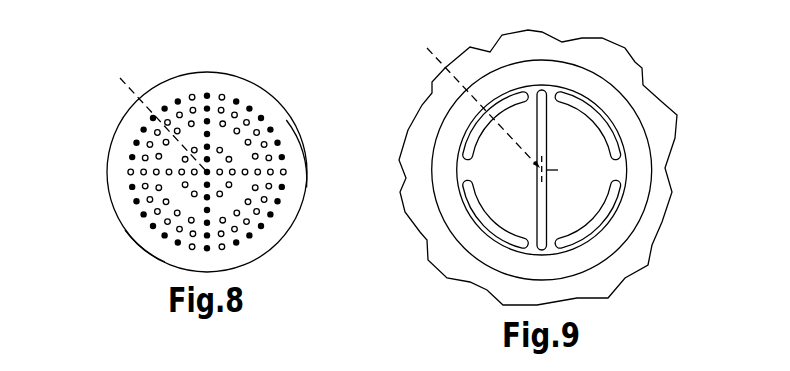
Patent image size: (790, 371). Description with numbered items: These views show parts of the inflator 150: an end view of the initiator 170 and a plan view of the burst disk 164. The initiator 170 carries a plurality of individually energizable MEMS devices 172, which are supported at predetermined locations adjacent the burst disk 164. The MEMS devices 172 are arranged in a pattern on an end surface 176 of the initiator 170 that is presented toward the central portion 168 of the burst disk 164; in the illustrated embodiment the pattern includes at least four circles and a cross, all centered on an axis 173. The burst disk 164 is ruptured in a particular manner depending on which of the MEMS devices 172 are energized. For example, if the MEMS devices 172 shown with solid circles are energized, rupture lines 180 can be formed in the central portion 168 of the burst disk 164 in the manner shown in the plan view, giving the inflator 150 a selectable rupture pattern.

In FIG. 8, the inflator 150 is at (97, 224).
In FIG. 9, the inflator 150 is at (674, 240).
In FIG. 9, the burst disk 164 is at (651, 128).
In FIG. 9, the central portion 168 is at (628, 171).
In FIG. 8, the initiator 170 is at (140, 258).
In FIG. 8, the MEMS devices 172 is at (208, 107).
In FIG. 8, the axis 173 is at (152, 112).
In FIG. 9, the axis 173 is at (482, 104).
In FIG. 8, the end surface 176 is at (280, 122).
In FIG. 9, the rupture lines 180 is at (588, 106).